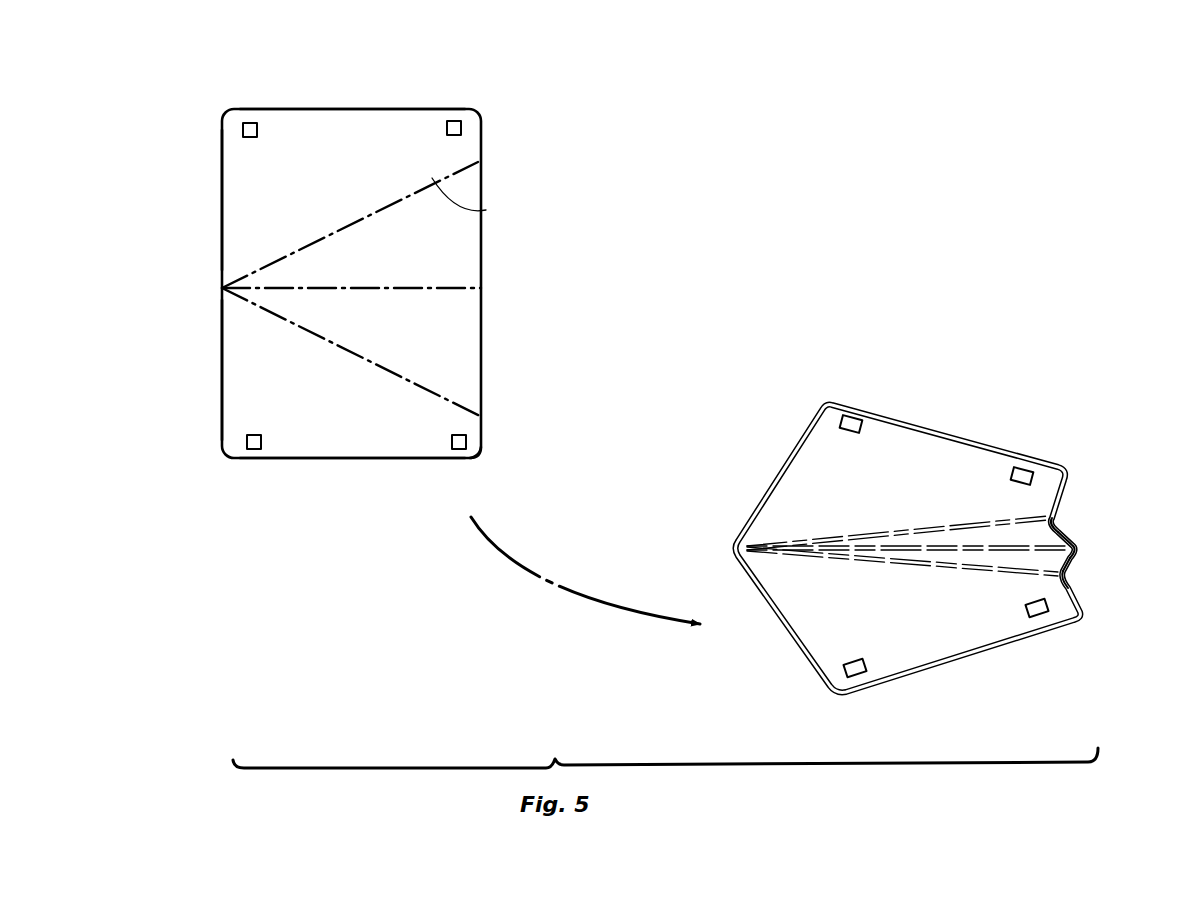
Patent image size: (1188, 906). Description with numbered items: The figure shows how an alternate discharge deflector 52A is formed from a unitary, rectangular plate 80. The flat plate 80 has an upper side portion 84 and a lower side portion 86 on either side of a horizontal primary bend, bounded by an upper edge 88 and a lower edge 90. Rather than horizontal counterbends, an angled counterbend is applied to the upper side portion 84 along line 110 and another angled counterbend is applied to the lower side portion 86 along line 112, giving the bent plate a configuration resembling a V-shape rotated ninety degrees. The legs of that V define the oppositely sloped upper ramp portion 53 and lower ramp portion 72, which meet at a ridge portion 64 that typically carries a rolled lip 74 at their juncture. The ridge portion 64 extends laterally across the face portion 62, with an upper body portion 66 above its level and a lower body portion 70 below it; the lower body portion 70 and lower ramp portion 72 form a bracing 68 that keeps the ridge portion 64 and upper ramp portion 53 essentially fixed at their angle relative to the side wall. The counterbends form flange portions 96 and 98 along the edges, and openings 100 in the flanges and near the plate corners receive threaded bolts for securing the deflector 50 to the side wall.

The folded bag/container product 50 is at (895, 507).
The discharge deflector 52A is at (985, 390).
The upper ramp portion 53 is at (1044, 522).
The face portion 62 is at (852, 474).
The ridge portion 64 is at (1076, 550).
The upper body portion 66 is at (908, 458).
The bracing 68 is at (1070, 579).
The lower body portion 70 is at (947, 632).
The lower ramp portion 72 is at (1066, 573).
The rolled lip 74 is at (878, 553).
The rectangular plate 80 is at (482, 122).
The upper side portion 84 is at (252, 180).
The lower side portion 86 is at (252, 372).
The upper edge 88 is at (312, 108).
The lower edge 90 is at (318, 460).
The flange portion 96 is at (438, 149).
The flange portion 98 is at (476, 444).
The openings 100 is at (249, 122).
The line 110 is at (486, 210).
The line 112 is at (458, 412).